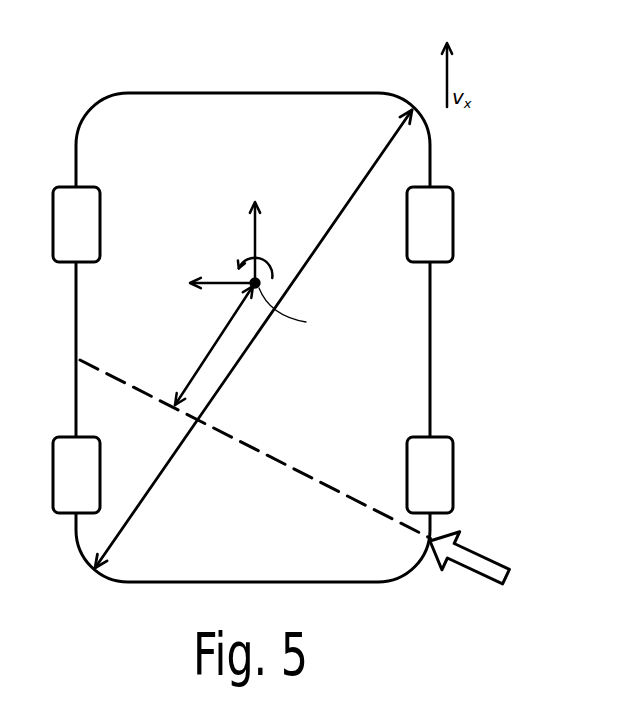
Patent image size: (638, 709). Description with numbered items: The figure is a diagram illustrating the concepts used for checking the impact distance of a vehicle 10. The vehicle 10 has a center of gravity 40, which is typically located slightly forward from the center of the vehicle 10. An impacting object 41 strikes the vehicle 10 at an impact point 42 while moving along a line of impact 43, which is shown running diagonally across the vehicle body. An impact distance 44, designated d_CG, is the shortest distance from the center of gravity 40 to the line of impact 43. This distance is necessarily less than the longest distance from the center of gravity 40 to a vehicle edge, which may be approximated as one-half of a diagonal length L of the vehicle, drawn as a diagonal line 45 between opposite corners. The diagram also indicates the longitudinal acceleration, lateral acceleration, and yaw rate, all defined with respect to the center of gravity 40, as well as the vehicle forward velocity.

The vehicle 10 is at (132, 93).
The center of gravity 40 is at (262, 284).
The impacting object 41 is at (492, 555).
The impact point 42 is at (429, 544).
The line of impact 43 is at (272, 459).
The impact distance 44 is at (214, 335).
The vehicle diagonal line 45 is at (372, 160).